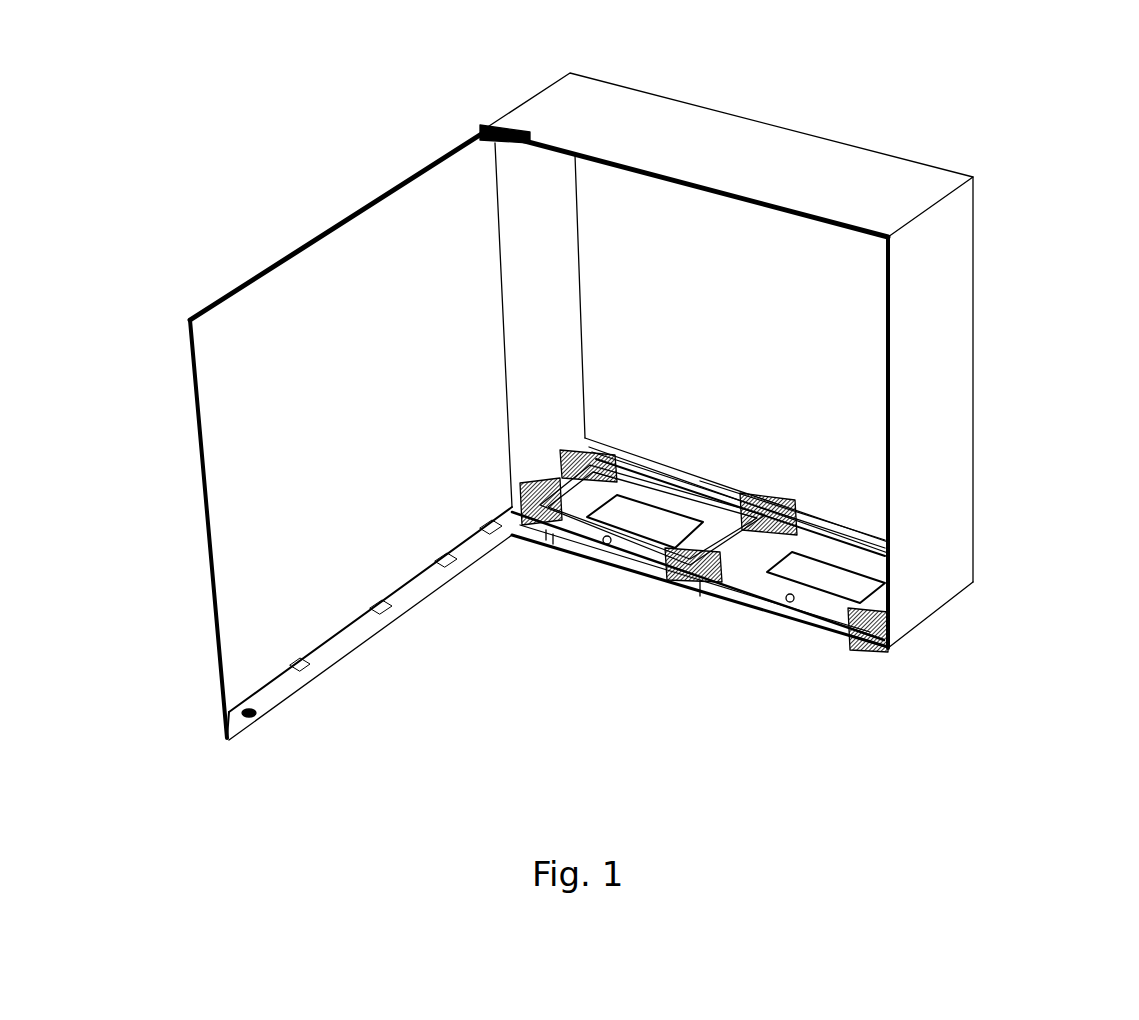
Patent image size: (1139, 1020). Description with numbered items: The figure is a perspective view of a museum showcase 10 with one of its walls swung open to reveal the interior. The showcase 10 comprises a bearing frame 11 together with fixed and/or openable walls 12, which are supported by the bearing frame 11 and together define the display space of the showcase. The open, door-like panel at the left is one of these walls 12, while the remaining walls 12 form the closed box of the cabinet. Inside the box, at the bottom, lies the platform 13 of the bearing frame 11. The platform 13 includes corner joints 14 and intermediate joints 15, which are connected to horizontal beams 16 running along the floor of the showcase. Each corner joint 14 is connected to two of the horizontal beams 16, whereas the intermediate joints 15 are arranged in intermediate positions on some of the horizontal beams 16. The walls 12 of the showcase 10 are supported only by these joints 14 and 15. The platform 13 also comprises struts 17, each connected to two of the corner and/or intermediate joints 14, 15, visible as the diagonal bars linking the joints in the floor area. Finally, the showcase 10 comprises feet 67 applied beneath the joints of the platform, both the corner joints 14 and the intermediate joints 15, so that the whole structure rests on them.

The showcase 10 is at (950, 153).
The fixed and/or openable walls 12 is at (532, 213).
The bearing frame 11 is at (622, 432).
The platform 13 is at (665, 447).
The horizontal beams 16 is at (700, 481).
The struts 17 is at (550, 485).
The corner joints 14 is at (545, 505).
The intermediate joints 15 is at (755, 575).
The feet 67 is at (887, 655).